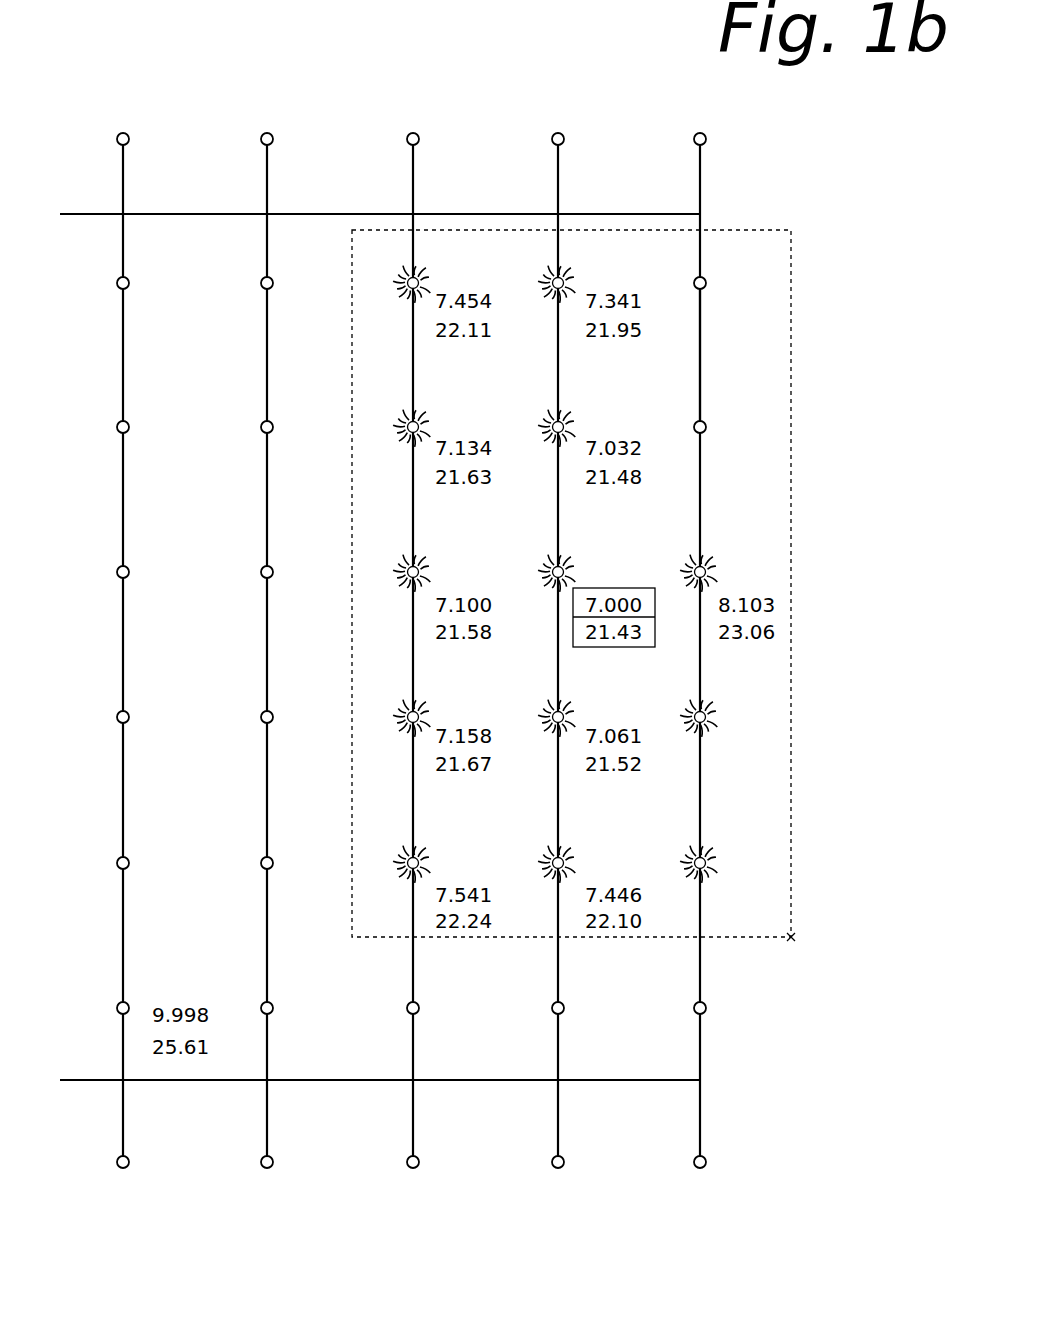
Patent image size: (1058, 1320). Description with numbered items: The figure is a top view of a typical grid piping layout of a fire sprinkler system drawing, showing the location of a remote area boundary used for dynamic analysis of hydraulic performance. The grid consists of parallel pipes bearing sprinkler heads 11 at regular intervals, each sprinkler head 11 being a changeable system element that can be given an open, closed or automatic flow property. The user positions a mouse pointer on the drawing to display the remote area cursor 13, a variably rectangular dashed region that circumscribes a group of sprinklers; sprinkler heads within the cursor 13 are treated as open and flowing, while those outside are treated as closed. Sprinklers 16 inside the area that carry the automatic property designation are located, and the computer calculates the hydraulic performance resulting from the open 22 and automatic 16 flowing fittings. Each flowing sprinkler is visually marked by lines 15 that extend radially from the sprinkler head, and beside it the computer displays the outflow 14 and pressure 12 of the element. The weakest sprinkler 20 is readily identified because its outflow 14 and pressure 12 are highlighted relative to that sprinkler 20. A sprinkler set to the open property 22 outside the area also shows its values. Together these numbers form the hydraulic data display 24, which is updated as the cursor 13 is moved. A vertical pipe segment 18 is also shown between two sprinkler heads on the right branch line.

The sprinkler head 11 is at (130, 430).
The pressure 12 is at (790, 727).
The remote area cursor 13 is at (507, 937).
The outflow 14 is at (790, 763).
The lines 15 is at (418, 566).
The automatic property sprinkler 16 is at (706, 566).
The line segment 18 is at (705, 286).
The weakest sprinkler 20 is at (565, 568).
The open property sprinkler 22 is at (128, 1004).
The hydraulic data display 24 is at (783, 892).